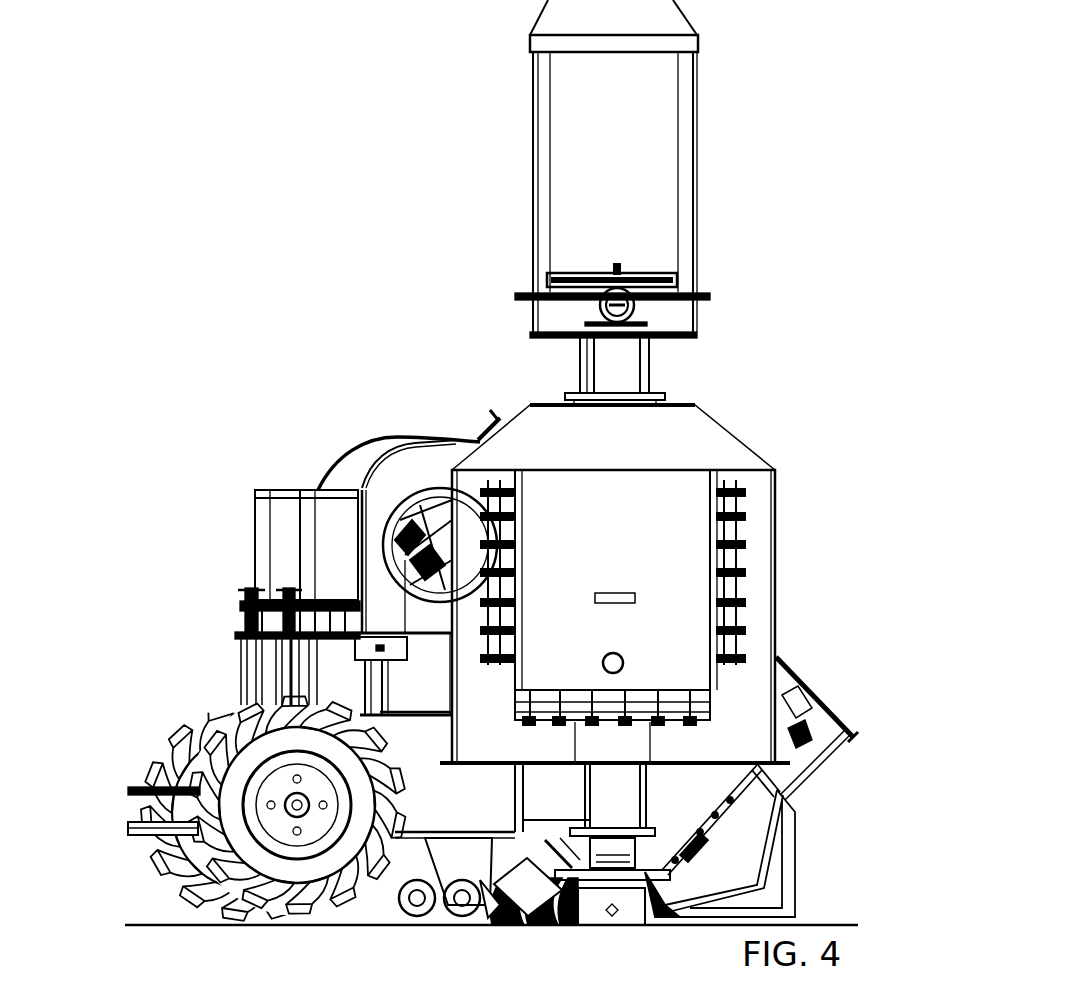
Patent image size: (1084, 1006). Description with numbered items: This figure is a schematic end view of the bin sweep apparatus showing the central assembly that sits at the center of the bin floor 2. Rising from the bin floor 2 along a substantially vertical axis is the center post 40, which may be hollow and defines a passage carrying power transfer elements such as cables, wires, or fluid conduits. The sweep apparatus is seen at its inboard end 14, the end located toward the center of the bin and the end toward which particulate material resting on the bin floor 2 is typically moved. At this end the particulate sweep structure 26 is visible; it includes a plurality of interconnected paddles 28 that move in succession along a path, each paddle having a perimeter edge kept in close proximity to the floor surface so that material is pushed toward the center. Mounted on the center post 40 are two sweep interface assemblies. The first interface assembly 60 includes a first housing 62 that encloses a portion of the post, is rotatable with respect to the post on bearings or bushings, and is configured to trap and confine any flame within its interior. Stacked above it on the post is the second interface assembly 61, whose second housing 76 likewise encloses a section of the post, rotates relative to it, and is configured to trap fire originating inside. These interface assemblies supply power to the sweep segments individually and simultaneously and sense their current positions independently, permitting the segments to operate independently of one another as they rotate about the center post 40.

The bin floor 2 is at (838, 872).
The inboard end 14 is at (450, 420).
The particulate sweep structure 26 is at (702, 936).
The paddles 28 is at (745, 845).
The center post 40 is at (596, 905).
The first interface assembly 60 is at (716, 410).
The second interface assembly 61 is at (718, 100).
The first housing 62 is at (738, 528).
The second housing 76 is at (680, 205).